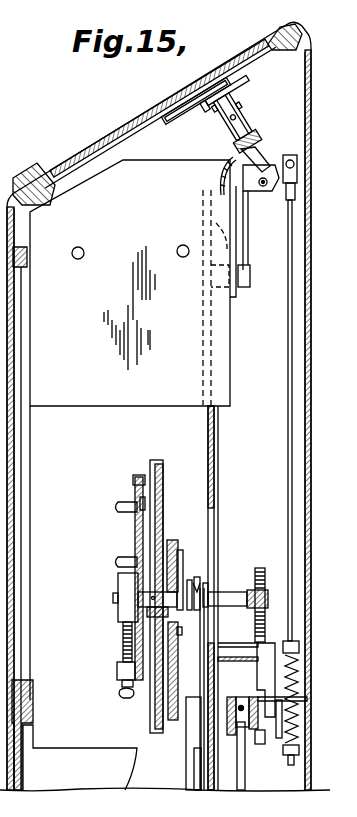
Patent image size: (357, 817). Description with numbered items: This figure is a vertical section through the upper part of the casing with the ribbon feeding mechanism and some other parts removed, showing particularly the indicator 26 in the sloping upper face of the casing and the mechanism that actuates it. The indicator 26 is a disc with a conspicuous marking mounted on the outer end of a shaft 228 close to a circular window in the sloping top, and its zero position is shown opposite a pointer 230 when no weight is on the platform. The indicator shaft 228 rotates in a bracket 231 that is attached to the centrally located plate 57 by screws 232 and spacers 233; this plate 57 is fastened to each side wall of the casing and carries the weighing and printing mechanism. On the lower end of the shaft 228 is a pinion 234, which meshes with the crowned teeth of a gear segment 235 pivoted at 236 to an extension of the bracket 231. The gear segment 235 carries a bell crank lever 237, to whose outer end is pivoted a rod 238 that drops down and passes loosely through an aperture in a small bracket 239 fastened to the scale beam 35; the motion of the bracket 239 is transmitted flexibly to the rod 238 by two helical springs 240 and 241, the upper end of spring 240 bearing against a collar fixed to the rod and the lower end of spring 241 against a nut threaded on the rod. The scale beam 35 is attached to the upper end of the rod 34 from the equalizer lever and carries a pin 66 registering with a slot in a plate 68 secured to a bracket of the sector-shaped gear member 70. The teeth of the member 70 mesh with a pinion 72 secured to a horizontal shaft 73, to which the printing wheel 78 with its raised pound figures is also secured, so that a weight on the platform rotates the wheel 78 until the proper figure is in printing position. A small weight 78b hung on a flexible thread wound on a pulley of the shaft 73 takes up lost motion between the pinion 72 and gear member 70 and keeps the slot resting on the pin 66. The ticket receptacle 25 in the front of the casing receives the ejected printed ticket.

The indicator 26 is at (256, 63).
The indicator shaft 228 is at (227, 110).
The pointer 230 is at (168, 118).
The bracket 231 is at (207, 125).
The pinion 234 is at (247, 140).
The gear segment 235 is at (252, 163).
The pivot 236 is at (267, 190).
The bell crank lever 237 is at (300, 158).
The screws 232 is at (247, 268).
The spacers 233 is at (203, 226).
The rod 238 is at (288, 334).
The bracket 239 is at (277, 690).
The helical spring 240 is at (318, 684).
The helical spring 241 is at (302, 758).
The plate 57 is at (216, 462).
The printing wheel 78 is at (157, 491).
The weight 78b is at (200, 762).
The shaft 73 is at (222, 600).
The pinion 72 is at (268, 600).
The sector-shaped gear member 70 is at (255, 621).
The scale beam 35 is at (248, 700).
The rod 34 is at (243, 782).
The plate 68 is at (256, 732).
The pin 66 is at (285, 722).
The ticket receptacle 25 is at (70, 752).